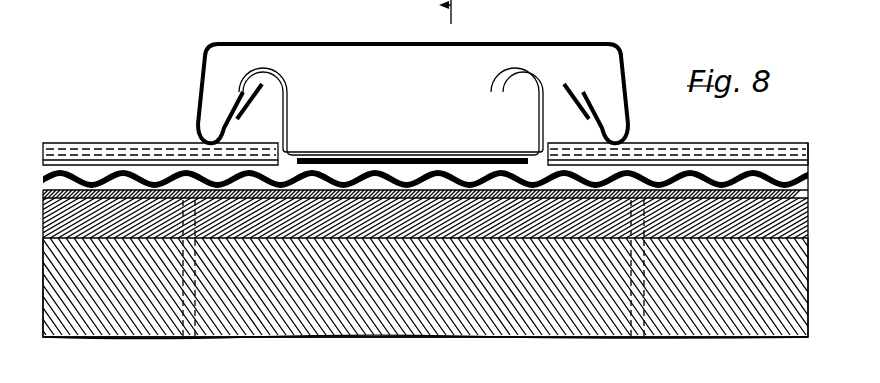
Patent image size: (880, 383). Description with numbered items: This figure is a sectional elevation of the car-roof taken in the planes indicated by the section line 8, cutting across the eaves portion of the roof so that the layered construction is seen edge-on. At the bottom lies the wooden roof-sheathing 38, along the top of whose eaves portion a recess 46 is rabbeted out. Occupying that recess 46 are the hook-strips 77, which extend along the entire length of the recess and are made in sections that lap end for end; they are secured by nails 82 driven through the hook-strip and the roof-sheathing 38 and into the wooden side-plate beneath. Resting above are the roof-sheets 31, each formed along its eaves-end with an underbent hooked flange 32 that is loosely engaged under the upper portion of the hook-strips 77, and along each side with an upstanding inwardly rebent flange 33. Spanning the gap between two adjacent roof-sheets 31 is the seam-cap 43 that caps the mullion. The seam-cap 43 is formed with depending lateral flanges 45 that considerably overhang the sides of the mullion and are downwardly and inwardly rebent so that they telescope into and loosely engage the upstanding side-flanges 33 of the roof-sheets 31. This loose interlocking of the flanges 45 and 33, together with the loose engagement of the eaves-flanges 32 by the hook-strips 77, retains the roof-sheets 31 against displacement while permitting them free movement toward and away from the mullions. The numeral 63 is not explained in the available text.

The section line 8 is at (453, 13).
The roof-sheet 31 is at (96, 143).
The underbent hooked flange 32 is at (153, 155).
The upstanding inwardly rebent flange 33 is at (292, 81).
The wooden roof-sheathing 38 is at (383, 297).
The seam-cap 43 is at (369, 41).
The depending lateral flange 45 is at (200, 62).
The recess 46 is at (416, 160).
The lower layer 63 is at (263, 293).
The hook-strip 77 is at (127, 191).
The nail 82 is at (181, 299).